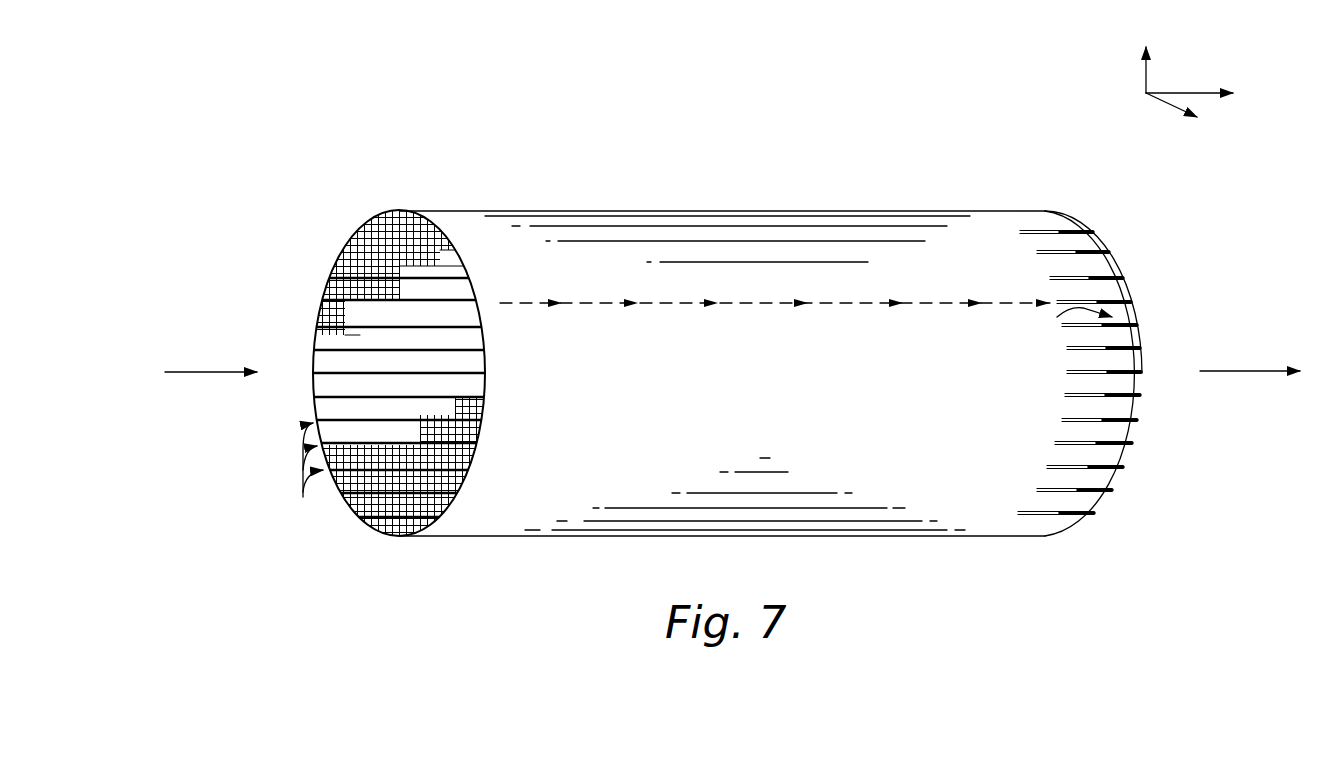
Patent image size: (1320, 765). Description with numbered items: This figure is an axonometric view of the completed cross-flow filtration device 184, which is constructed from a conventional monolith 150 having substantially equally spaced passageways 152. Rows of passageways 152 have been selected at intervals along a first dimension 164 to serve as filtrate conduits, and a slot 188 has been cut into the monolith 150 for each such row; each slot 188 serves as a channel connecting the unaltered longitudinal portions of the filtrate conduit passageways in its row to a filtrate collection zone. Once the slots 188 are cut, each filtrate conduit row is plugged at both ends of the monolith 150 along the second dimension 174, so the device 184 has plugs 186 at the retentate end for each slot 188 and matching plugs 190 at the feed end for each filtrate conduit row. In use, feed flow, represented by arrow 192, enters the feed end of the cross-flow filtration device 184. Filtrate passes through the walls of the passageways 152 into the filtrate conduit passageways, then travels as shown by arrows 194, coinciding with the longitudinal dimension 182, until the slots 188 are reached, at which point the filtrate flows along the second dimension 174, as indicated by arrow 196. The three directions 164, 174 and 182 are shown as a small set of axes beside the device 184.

The monolith 150 is at (577, 211).
The passageways 152 is at (333, 288).
The first dimension 164 is at (1146, 73).
The second dimension 174 is at (1170, 105).
The dimension 182 is at (1192, 93).
The cross-flow filtration device 184 is at (918, 46).
The plugs 186 is at (1082, 228).
The slots 188 is at (1043, 491).
The plugs 190 is at (311, 475).
The arrow 192 is at (215, 372).
The arrows 194 is at (855, 306).
The arrow 196 is at (1064, 323).